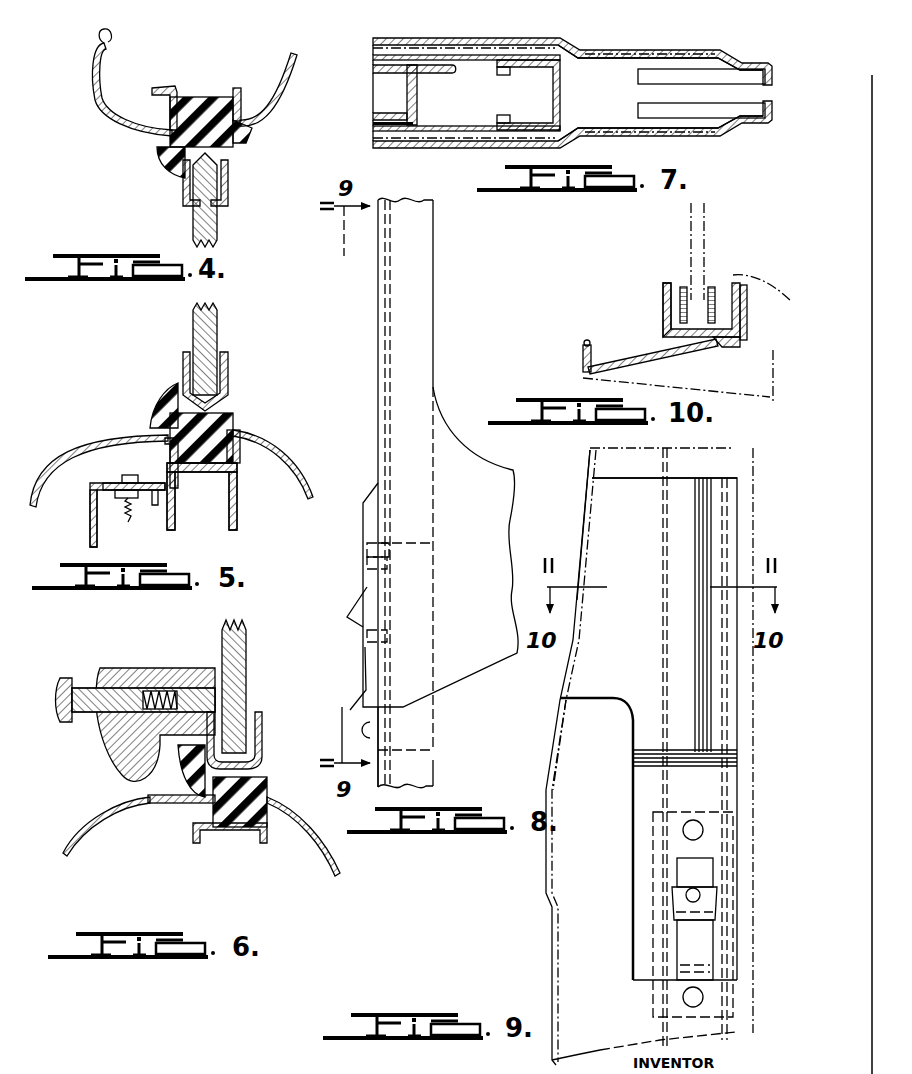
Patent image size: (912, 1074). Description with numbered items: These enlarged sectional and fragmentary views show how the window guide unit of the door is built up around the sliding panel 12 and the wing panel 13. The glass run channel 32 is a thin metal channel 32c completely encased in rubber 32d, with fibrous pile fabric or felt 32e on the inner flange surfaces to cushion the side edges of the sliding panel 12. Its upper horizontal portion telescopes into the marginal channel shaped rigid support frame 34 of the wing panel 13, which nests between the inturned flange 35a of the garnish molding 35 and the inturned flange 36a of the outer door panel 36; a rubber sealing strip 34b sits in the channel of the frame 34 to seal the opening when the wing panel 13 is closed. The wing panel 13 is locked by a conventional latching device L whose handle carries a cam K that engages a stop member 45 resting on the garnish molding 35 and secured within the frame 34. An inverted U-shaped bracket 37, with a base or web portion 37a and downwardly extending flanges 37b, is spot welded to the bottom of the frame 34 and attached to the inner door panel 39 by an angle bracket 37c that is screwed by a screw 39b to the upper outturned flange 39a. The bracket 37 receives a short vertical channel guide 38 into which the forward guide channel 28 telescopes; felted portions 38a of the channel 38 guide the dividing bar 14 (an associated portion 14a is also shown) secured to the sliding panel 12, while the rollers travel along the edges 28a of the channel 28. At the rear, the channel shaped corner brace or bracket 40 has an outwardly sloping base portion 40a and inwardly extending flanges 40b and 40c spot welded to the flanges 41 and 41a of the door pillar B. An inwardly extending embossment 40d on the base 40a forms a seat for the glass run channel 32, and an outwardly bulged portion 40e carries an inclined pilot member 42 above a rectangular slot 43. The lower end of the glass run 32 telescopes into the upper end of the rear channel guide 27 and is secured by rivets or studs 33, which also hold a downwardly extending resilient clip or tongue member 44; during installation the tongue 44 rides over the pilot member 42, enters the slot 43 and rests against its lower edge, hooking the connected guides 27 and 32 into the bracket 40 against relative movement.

In FIG. 10, the sliding panel 12 is at (703, 238).
In FIG. 4, the wing panel 13 is at (212, 224).
In FIG. 5, the wing panel 13 is at (217, 327).
In FIG. 6, the wing panel 13 is at (247, 681).
In FIG. 7, the dividing bar 14 is at (388, 72).
In FIG. 7, the socket housing wall 14a is at (435, 66).
In FIG. 8, the rear channel guide 27 is at (418, 767).
In FIG. 7, the forward guide channel 28 is at (560, 60).
In FIG. 7, the edges of channel guide 28a is at (500, 75).
In FIG. 8, the glass run channel 32 is at (433, 207).
In FIG. 9, the glass run channel 32 is at (697, 457).
In FIG. 10, the thin metal channel 32c is at (662, 300).
In FIG. 10, the rubber encasement 32d is at (668, 283).
In FIG. 10, the fibrous pile fabric or felt 32e is at (712, 285).
In FIG. 8, the rivets or studs 33 is at (370, 563).
In FIG. 4, the support frame 34 is at (207, 96).
In FIG. 5, the support frame 34 is at (234, 463).
In FIG. 6, the support frame 34 is at (200, 842).
In FIG. 4, the sealing strip 34b is at (238, 148).
In FIG. 5, the sealing strip 34b is at (215, 423).
In FIG. 4, the garnish molding 35 is at (138, 128).
In FIG. 5, the garnish molding 35 is at (124, 411).
In FIG. 6, the garnish molding 35 is at (97, 843).
In FIG. 4, the inturned flange of garnish molding 35a is at (163, 97).
In FIG. 5, the inturned flange of garnish molding 35a is at (170, 463).
In FIG. 4, the outer door panel 36 is at (282, 108).
In FIG. 5, the outer door panel 36 is at (307, 485).
In FIG. 4, the inturned flange of outer door panel 36a is at (240, 104).
In FIG. 5, the inturned flange of outer door panel 36a is at (240, 455).
In FIG. 5, the inverted U-shaped bracket 37 is at (236, 530).
In FIG. 7, the inverted U-shaped bracket 37 is at (705, 142).
In FIG. 5, the base or web portion 37a is at (198, 472).
In FIG. 5, the downwardly extending flanges 37b is at (175, 508).
In FIG. 7, the downwardly extending flanges 37b is at (520, 40).
In FIG. 5, the angle bracket 37c is at (148, 477).
In FIG. 7, the angle bracket 37c is at (628, 57).
In FIG. 7, the short vertical channel guide 38 is at (418, 68).
In FIG. 7, the felted portions 38a is at (400, 123).
In FIG. 5, the inner door panel 39 is at (90, 541).
In FIG. 5, the upper outturned flange 39a is at (142, 518).
In FIG. 5, the screw 39b is at (103, 487).
In FIG. 8, the corner brace or bracket 40 is at (377, 370).
In FIG. 10, the outwardly sloping base portion 40a is at (655, 358).
In FIG. 9, the outwardly sloping base portion 40a is at (598, 522).
In FIG. 10, the inwardly extending flange 40b is at (592, 358).
In FIG. 9, the inwardly extending flange 40b is at (586, 492).
In FIG. 10, the inwardly extending flange 40c is at (747, 320).
In FIG. 9, the inwardly extending flange 40c is at (720, 775).
In FIG. 10, the inwardly extending embossment 40d is at (740, 343).
In FIG. 9, the inwardly extending embossment 40d is at (717, 492).
In FIG. 8, the outwardly bulged portion 40e is at (372, 546).
In FIG. 10, the door pillar flange 41 is at (583, 365).
In FIG. 9, the door pillar flange 41 is at (568, 650).
In FIG. 10, the door pillar flange 41a is at (765, 278).
In FIG. 8, the pilot member 42 is at (350, 606).
In FIG. 9, the pilot member 42 is at (707, 877).
In FIG. 9, the rectangular slot 43 is at (712, 912).
In FIG. 8, the resilient clip or tongue member 44 is at (358, 680).
In FIG. 9, the resilient clip or tongue member 44 is at (700, 942).
In FIG. 6, the stop member 45 is at (160, 803).
In FIG. 6, the latching device L is at (118, 665).
In FIG. 6, the cam K is at (128, 763).
In FIG. 10, the door pillar B is at (707, 392).